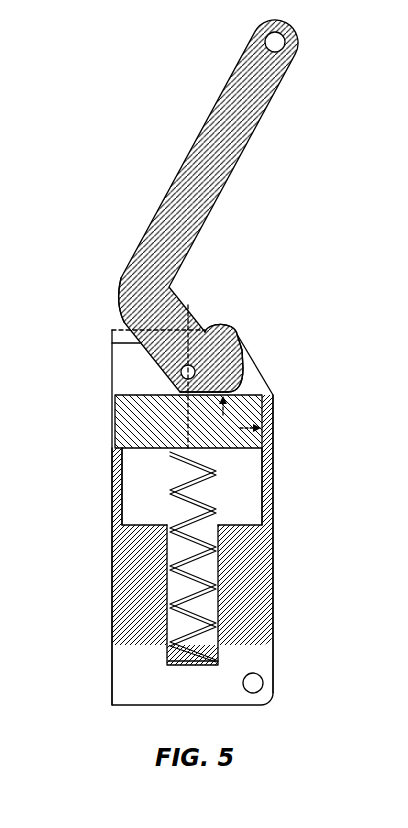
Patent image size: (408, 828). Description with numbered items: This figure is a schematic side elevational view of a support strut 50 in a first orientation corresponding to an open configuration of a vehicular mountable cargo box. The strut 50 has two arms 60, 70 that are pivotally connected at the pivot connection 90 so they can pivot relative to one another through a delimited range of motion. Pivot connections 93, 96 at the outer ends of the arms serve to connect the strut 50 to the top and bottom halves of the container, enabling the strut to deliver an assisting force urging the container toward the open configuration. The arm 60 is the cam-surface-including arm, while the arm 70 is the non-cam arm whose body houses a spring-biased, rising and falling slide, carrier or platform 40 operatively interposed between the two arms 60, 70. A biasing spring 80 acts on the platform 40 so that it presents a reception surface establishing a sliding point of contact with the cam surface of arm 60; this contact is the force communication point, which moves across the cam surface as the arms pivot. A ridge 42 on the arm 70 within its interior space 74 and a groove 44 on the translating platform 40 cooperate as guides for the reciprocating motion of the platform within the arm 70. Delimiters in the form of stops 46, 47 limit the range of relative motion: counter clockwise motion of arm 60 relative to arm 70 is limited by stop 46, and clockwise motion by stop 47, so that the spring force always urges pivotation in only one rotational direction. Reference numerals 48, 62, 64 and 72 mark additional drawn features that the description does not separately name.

The platform 40 is at (188, 532).
The ridge 42 is at (123, 423).
The groove 44 is at (275, 456).
The stop 46 is at (112, 331).
The stop 47 is at (262, 398).
The housing cavity 48 is at (110, 483).
The strut 50 is at (256, 326).
The arm 60 is at (207, 148).
The lever bend 62 is at (119, 290).
The cam lobe 64 is at (245, 385).
The arm 70 is at (98, 672).
The spring 72 is at (208, 570).
The interior space 74 is at (112, 518).
The biasing spring 80 is at (220, 528).
The pivot connection 90 is at (172, 389).
The pivot connection 93 is at (266, 34).
The pivot connection 96 is at (258, 690).